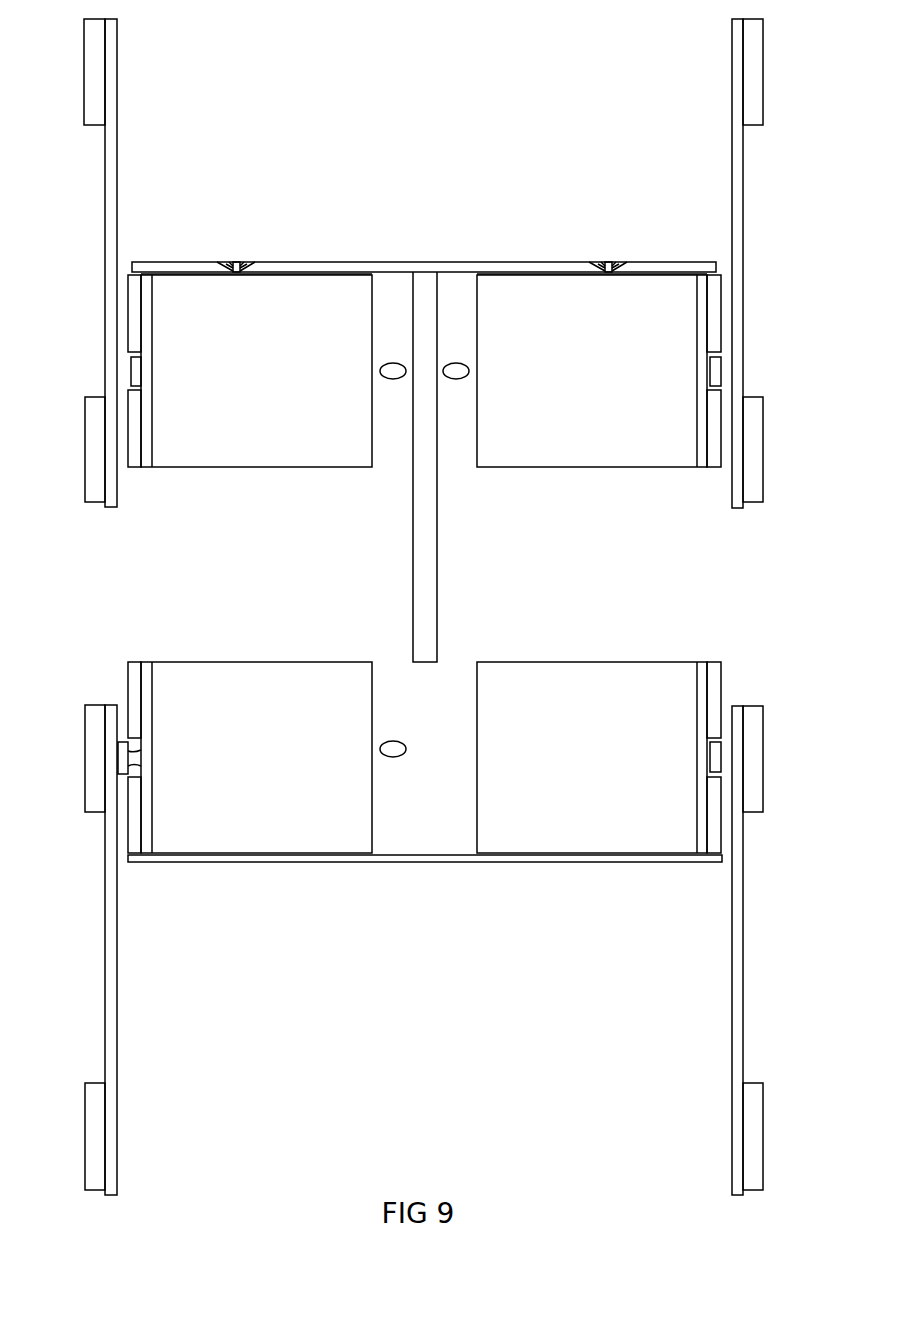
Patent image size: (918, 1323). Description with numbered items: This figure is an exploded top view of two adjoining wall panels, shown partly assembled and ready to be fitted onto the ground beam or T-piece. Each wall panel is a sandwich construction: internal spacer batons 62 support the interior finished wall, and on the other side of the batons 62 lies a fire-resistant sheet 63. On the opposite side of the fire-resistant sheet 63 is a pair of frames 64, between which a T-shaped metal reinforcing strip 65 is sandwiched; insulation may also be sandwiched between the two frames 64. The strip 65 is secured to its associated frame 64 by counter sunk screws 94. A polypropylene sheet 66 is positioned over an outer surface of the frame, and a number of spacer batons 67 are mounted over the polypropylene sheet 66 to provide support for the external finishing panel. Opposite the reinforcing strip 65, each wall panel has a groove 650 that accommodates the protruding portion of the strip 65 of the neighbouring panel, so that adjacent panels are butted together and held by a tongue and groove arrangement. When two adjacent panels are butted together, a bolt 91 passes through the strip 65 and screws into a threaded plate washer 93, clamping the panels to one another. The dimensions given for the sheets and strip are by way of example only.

The internal spacer batons 62 is at (85, 463).
The fire-resistant sheet 63 is at (105, 857).
The frames 64 is at (270, 455).
The metal reinforcing strip 65 is at (437, 568).
The polypropylene sheet 66 is at (743, 353).
The spacer batons 67 is at (763, 458).
The bolt 91 is at (125, 748).
The threaded plate washer 93 is at (717, 755).
The counter sunk screws 94 is at (236, 259).
The groove 650 is at (427, 823).